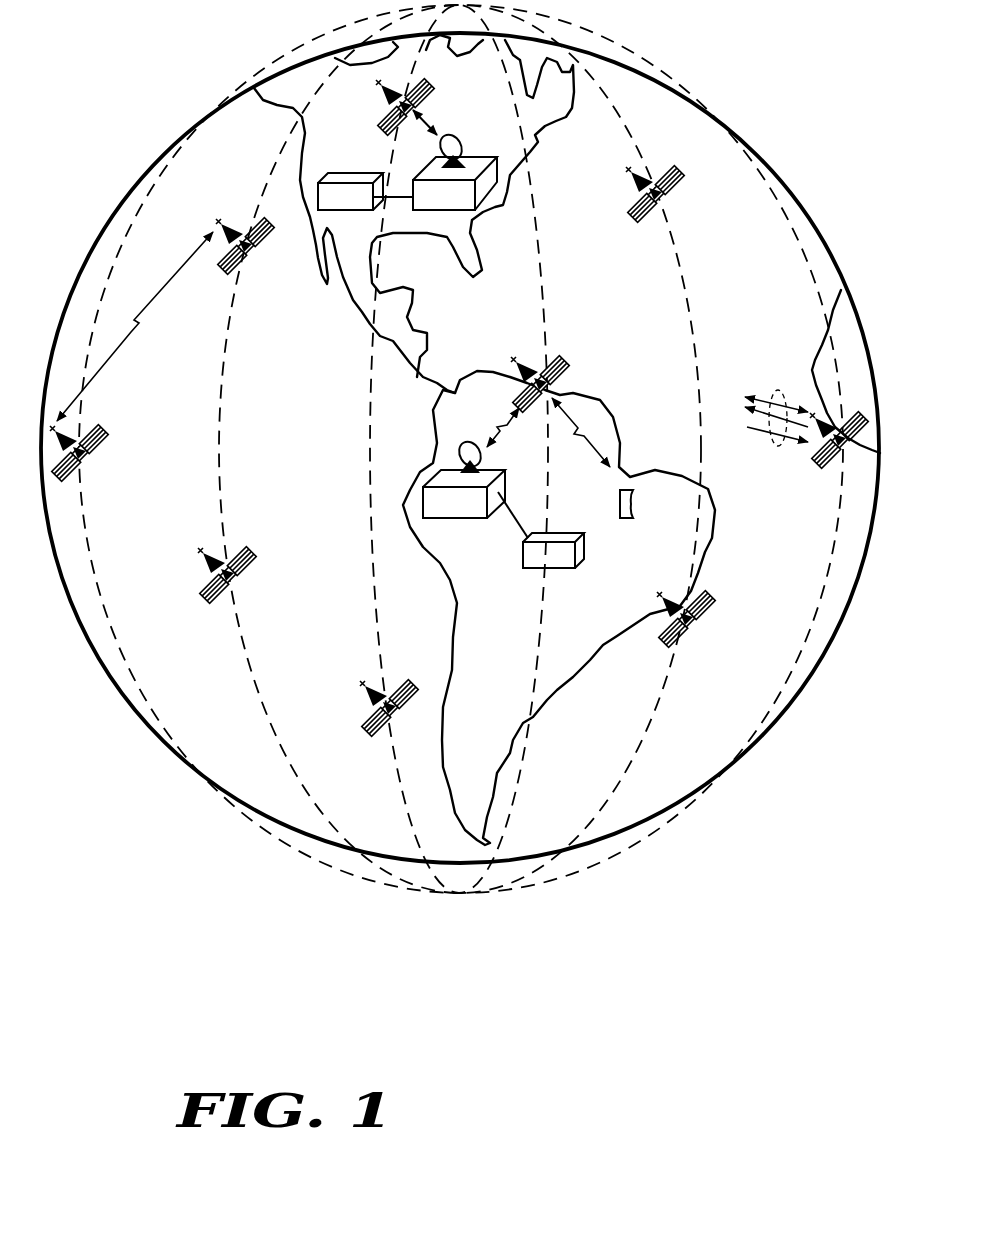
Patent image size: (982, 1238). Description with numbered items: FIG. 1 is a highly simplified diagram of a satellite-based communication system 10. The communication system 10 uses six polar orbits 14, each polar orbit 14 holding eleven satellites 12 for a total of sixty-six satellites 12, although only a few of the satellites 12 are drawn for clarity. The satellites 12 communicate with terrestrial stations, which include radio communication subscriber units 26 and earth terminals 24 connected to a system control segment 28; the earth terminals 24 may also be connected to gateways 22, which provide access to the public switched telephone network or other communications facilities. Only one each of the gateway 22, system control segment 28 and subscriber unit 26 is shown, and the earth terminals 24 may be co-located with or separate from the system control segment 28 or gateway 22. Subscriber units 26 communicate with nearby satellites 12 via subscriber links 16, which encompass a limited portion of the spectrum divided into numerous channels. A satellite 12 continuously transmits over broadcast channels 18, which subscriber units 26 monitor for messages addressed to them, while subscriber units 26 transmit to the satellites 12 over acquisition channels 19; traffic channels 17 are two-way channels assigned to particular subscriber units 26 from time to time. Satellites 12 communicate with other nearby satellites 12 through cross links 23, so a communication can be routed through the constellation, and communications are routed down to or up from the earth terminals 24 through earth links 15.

The satellite-based communication system 10 is at (455, 990).
The satellite 12 is at (383, 133).
The polar orbit 14 is at (276, 163).
The earth link 15 is at (497, 420).
The subscriber link 16 is at (582, 418).
The traffic channel 17 is at (762, 394).
The broadcast channel 18 is at (748, 409).
The acquisition channel 19 is at (766, 437).
The gateway 22 is at (559, 569).
The cross link 23 is at (150, 313).
The earth terminal 24 is at (480, 154).
The subscriber unit 26 is at (628, 522).
The system control segment 28 is at (335, 212).